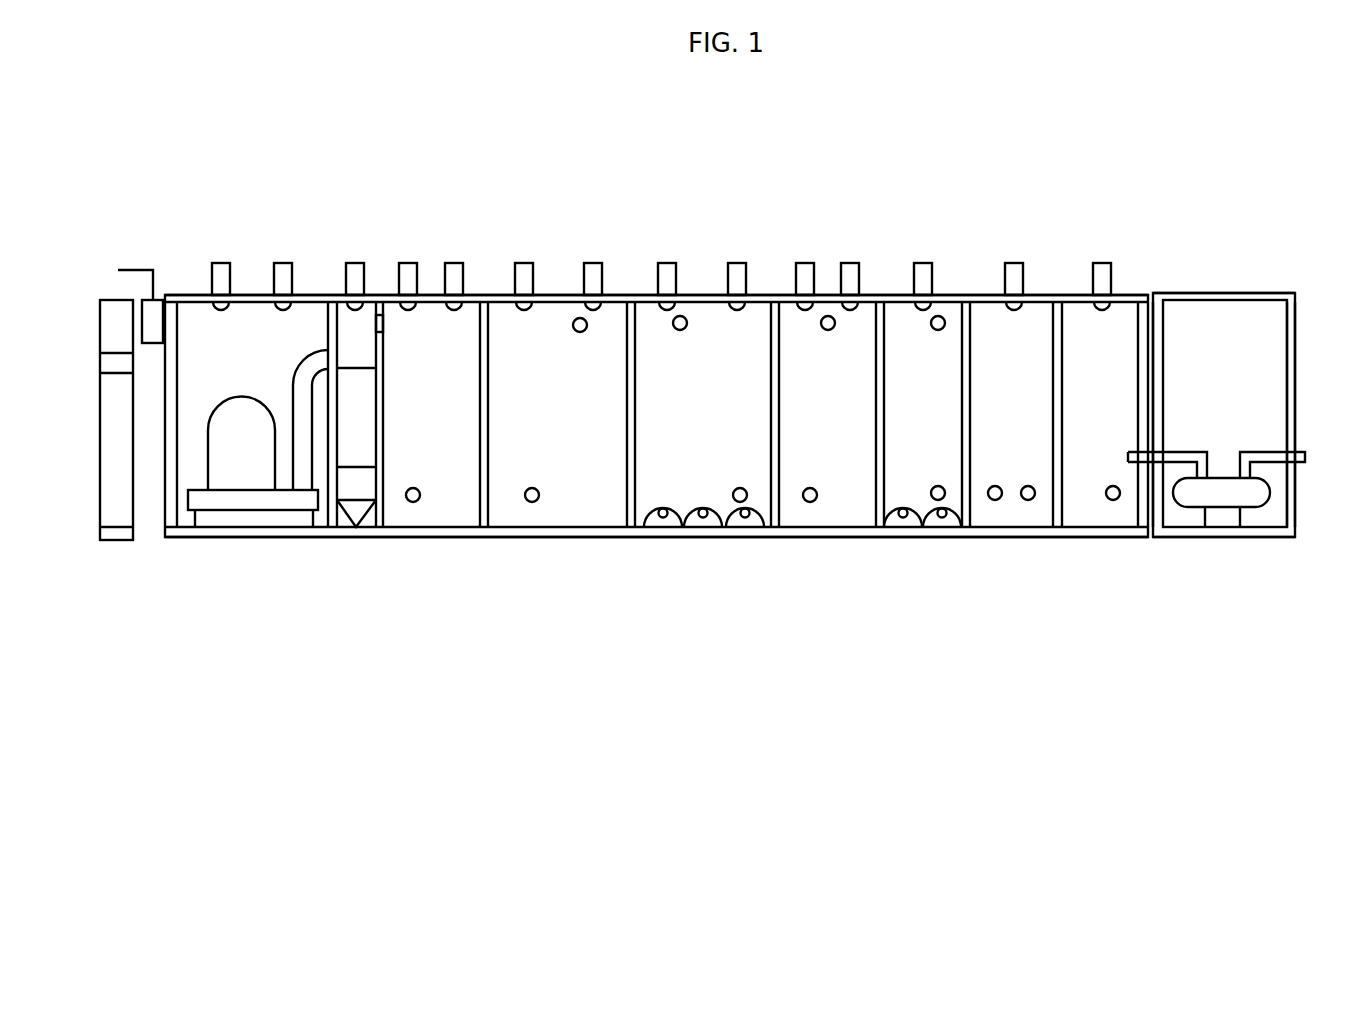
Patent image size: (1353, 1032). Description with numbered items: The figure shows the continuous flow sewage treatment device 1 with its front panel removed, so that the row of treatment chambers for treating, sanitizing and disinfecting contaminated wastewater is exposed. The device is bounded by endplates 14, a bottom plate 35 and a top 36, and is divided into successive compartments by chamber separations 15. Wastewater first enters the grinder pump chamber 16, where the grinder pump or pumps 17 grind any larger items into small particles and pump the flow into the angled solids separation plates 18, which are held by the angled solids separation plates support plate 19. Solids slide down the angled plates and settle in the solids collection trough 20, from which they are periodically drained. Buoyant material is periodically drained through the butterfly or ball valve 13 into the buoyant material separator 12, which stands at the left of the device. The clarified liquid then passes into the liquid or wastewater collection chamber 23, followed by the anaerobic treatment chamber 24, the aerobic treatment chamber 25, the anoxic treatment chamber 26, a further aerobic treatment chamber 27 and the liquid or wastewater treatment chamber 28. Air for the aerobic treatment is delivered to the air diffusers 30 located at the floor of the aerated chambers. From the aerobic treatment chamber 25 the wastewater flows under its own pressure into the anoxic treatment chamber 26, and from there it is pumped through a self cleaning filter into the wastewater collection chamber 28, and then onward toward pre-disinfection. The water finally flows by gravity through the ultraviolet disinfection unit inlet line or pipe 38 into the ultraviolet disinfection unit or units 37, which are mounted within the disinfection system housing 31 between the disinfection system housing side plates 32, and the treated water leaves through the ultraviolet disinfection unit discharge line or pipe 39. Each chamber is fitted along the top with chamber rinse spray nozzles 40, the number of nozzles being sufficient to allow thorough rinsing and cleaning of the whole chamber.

The sewage treatment device 1 is at (83, 468).
The buoyant material separator 12 is at (117, 537).
The valve to buoyant material separator 13 is at (158, 298).
The endplates 14 is at (170, 537).
The chamber separations 15 is at (333, 537).
The grinder pump chamber 16 is at (250, 312).
The grinder pump or pumps 17 is at (242, 510).
The angled solids separation plates 18 is at (367, 310).
The angled solids separation plates support plate 19 is at (377, 537).
The solids collection trough 20 is at (356, 527).
The liquid or wastewater collection chamber 23 is at (428, 527).
The anaerobic treatment chamber 24 is at (550, 527).
The aerobic treatment chamber 25 is at (710, 310).
The anoxic treatment chamber 26 is at (830, 527).
The aerobic treatment chamber 27 is at (897, 310).
The liquid or wastewater treatment chamber 28 is at (1013, 527).
The air diffusers 30 is at (663, 527).
The disinfection system housing 31 is at (1225, 305).
The disinfection system housing side plates 32 is at (1161, 305).
The bottom plate 35 is at (282, 537).
The top 36 is at (312, 295).
The ultraviolet disinfection unit or units 37 is at (1192, 507).
The ultraviolet disinfection unit inlet line or pipe 38 is at (1188, 452).
The ultraviolet disinfection unit discharge line or pipe 39 is at (1300, 462).
The chamber rinse spray nozzles 40 is at (1102, 263).